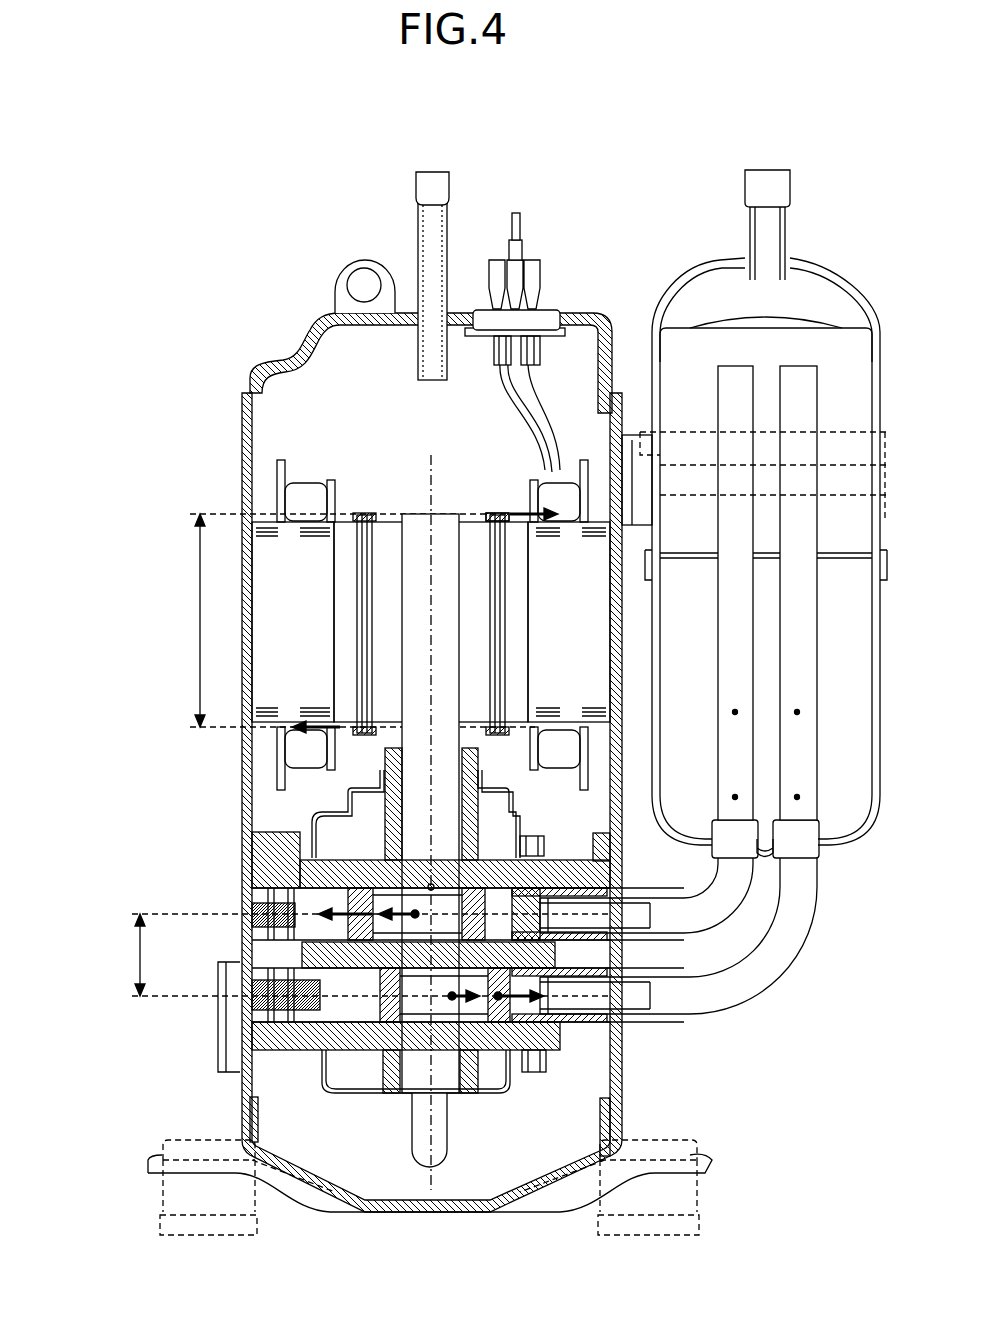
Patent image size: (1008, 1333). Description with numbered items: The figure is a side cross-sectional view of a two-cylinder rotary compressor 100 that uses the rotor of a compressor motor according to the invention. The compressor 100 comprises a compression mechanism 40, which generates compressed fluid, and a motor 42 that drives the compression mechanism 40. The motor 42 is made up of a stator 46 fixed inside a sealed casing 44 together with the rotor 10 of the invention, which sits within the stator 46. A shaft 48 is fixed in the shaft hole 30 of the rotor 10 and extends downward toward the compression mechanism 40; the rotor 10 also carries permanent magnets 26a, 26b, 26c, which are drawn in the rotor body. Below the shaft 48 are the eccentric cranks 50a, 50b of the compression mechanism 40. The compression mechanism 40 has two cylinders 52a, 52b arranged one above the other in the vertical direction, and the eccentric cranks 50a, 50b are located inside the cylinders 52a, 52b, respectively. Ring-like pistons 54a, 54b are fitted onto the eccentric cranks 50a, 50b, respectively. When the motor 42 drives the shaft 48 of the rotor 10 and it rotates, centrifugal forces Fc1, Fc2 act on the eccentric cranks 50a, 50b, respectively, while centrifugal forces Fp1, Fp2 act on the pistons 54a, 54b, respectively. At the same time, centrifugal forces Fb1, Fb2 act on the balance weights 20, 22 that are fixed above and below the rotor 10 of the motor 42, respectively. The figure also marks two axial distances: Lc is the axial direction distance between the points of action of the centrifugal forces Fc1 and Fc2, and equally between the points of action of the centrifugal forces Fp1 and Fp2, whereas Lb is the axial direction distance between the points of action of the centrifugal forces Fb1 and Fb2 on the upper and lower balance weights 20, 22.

The 2-cylinder rotary compressor 100 is at (302, 176).
The rotor 10 is at (433, 435).
The sealed casing 44 is at (242, 420).
The stator 46 is at (324, 466).
The balance weight 20 is at (525, 515).
The balance weight 22 is at (340, 722).
The permanent magnet 26a is at (497, 630).
The permanent magnet 26b is at (542, 588).
The permanent magnet 26c is at (366, 606).
The shaft hole 30 is at (456, 526).
The shaft 48 is at (447, 611).
The motor 42 is at (108, 512).
The compression mechanism 40 is at (108, 832).
The eccentric crank 50a is at (388, 905).
The eccentric crank 50b is at (413, 1096).
The cylinder 52a is at (302, 942).
The cylinder 52b is at (318, 1010).
The ring-like piston 54a is at (372, 870).
The ring-like piston 54b is at (376, 1026).
The axial direction distance Lb is at (363, 620).
The axial direction distance Lc is at (359, 955).
The centrifugal force Fb1 is at (530, 526).
The centrifugal force Fb2 is at (336, 727).
The centrifugal force Fp1 is at (290, 930).
The centrifugal force Fp2 is at (536, 1076).
The centrifugal force Fc1 is at (412, 886).
The centrifugal force Fc2 is at (446, 1010).